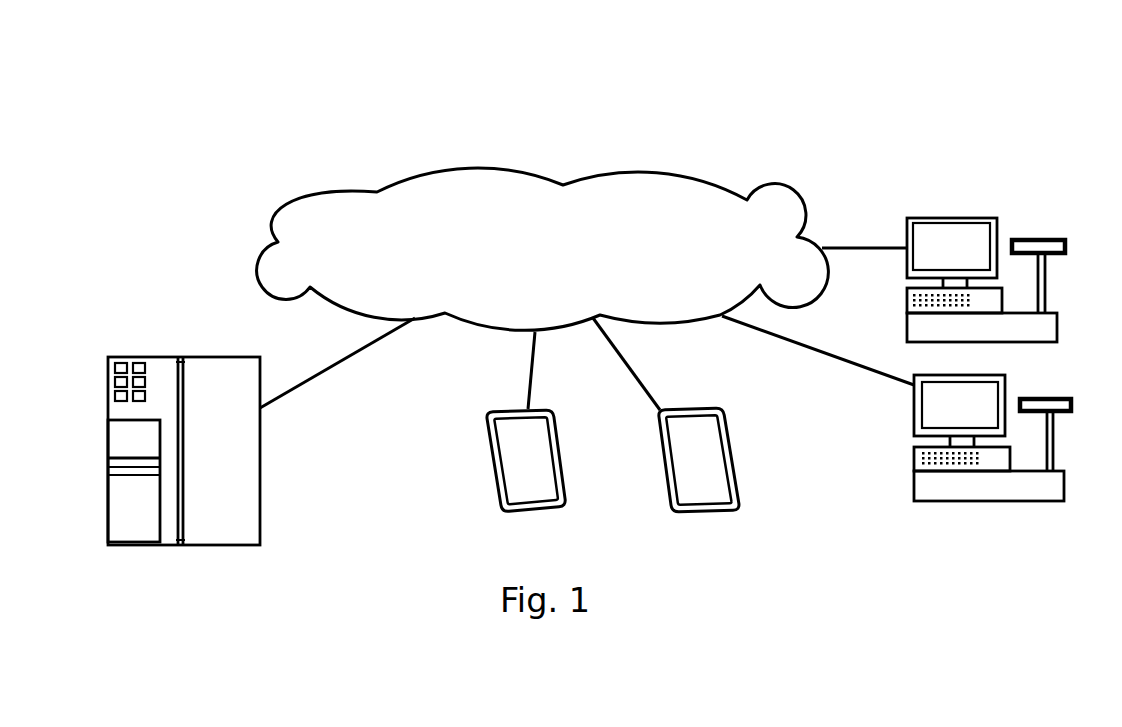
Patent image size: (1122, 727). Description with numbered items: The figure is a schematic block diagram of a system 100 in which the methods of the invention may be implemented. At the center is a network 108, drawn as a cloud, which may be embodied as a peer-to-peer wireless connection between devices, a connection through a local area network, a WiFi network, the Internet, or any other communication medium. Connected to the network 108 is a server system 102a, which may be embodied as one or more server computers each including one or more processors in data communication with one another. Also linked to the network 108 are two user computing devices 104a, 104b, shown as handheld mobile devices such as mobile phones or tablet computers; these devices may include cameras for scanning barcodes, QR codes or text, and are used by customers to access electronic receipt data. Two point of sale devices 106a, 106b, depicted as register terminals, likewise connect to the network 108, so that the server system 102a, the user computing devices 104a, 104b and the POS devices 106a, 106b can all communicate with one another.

The system 100 is at (692, 102).
The server system 102a is at (253, 441).
The user computing device 104a is at (492, 455).
The user computing device 104b is at (662, 447).
The point of sale (POS) device 106a is at (982, 262).
The point of sale (POS) device 106b is at (990, 420).
The network 108 is at (608, 262).